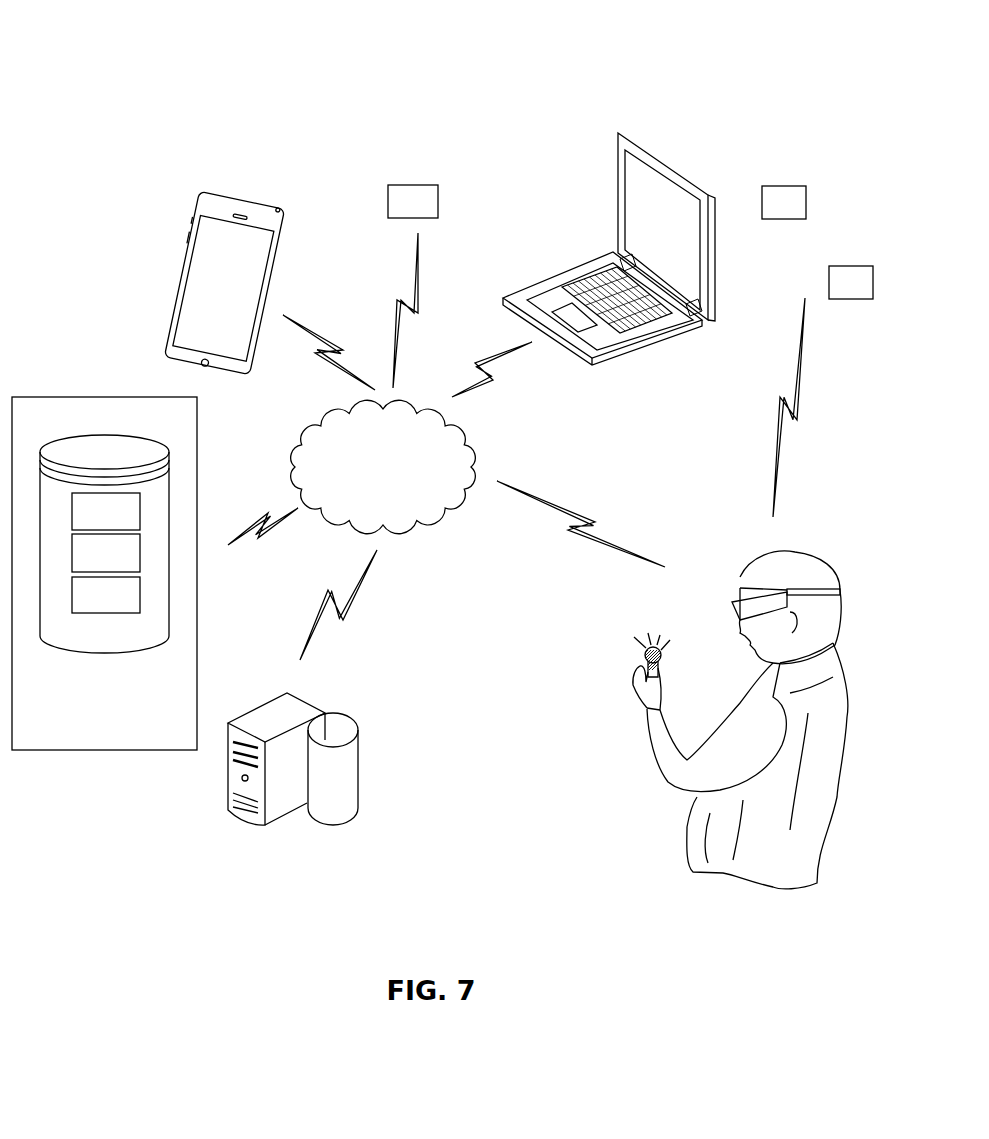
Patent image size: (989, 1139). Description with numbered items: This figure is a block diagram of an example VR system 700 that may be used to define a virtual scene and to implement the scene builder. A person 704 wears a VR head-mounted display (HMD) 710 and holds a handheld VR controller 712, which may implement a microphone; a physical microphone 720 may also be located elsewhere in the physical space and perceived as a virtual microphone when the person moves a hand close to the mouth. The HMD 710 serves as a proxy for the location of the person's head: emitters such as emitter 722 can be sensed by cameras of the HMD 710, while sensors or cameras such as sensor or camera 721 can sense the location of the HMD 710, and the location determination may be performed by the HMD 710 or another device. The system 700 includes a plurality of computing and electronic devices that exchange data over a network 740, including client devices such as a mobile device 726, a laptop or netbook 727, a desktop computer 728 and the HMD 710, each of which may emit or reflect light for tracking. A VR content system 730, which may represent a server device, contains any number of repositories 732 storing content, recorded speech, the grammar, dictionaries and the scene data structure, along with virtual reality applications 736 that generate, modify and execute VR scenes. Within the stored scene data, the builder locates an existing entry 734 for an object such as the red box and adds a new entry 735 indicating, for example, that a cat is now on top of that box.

The VR system 700 is at (103, 58).
The person 704 is at (702, 870).
The VR head-mounted display (HMD) 710 is at (773, 593).
The VR controller 712 is at (643, 650).
The microphone 720 is at (784, 202).
The sensor or camera 721 is at (413, 286).
The emitter 722 is at (823, 391).
The mobile device 726 is at (262, 203).
The laptop or netbook 727 is at (532, 292).
The desktop computer 728 is at (265, 718).
The VR content system 730 is at (155, 573).
The repository 732 is at (125, 443).
The entry 734 is at (106, 511).
The new entry 735 is at (106, 553).
The virtual reality application 736 is at (106, 595).
The network 740 is at (383, 467).